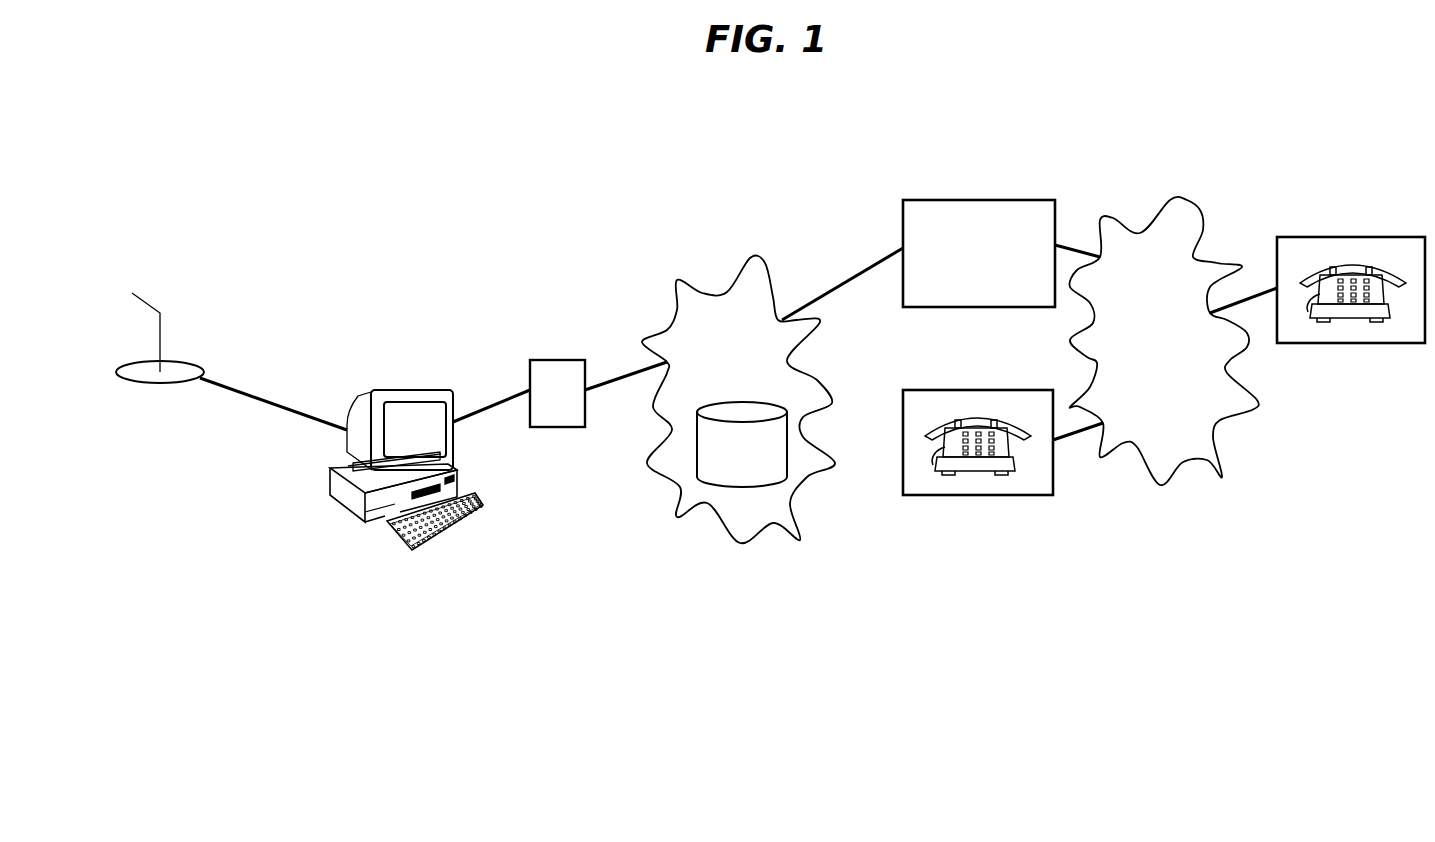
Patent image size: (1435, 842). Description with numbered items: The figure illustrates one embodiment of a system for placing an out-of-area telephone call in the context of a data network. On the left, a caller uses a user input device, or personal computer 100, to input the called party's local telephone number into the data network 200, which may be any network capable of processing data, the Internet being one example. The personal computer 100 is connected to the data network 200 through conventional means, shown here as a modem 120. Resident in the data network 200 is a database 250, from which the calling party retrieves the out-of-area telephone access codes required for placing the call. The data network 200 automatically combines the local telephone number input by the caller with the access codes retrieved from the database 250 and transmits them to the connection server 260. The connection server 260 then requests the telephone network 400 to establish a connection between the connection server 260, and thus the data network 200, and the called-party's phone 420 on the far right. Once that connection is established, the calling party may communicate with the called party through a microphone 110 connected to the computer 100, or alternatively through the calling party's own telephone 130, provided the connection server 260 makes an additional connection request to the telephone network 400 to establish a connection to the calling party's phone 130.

The personal computer 100 is at (405, 390).
The microphone 110 is at (160, 350).
The modem 120 is at (552, 360).
The calling party's telephone 130 is at (983, 390).
The data network 200 is at (772, 265).
The database 250 is at (728, 403).
The connection server 260 is at (975, 200).
The telephone network 400 is at (1203, 210).
The called-party's phone 420 is at (1350, 237).